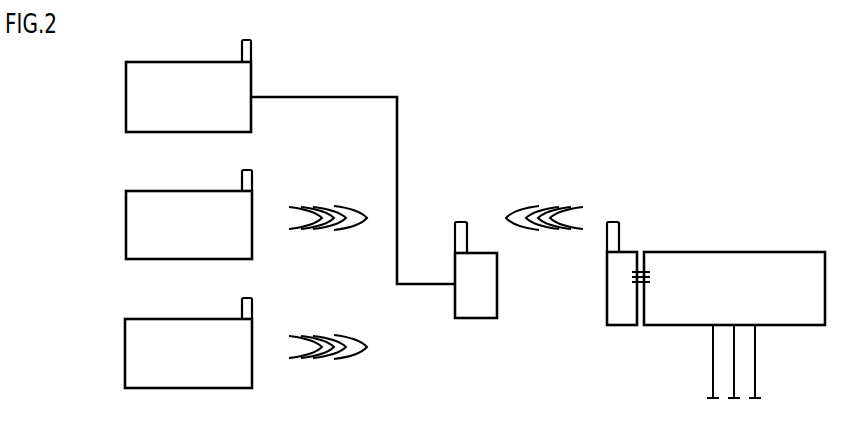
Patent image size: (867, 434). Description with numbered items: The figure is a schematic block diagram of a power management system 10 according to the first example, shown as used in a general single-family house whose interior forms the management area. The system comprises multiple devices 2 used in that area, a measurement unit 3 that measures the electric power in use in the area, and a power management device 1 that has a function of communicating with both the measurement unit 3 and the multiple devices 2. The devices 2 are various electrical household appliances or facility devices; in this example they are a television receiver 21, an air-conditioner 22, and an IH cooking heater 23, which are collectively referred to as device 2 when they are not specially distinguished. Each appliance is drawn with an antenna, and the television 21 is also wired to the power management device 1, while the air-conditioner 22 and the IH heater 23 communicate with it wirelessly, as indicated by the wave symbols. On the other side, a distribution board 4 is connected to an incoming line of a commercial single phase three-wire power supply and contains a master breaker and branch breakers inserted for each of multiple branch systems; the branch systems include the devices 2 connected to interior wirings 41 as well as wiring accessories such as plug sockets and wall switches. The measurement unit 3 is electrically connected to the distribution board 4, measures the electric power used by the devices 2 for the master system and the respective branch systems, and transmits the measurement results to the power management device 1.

The power management system 10 is at (509, 80).
The power management device 1 is at (479, 312).
The devices 2 is at (142, 214).
The television receiver 21 is at (130, 96).
The air-conditioner 22 is at (130, 227).
The IH cooking heater 23 is at (130, 360).
The measurement unit 3 is at (623, 317).
The distribution board 4 is at (733, 262).
The interior wirings 41 is at (713, 352).